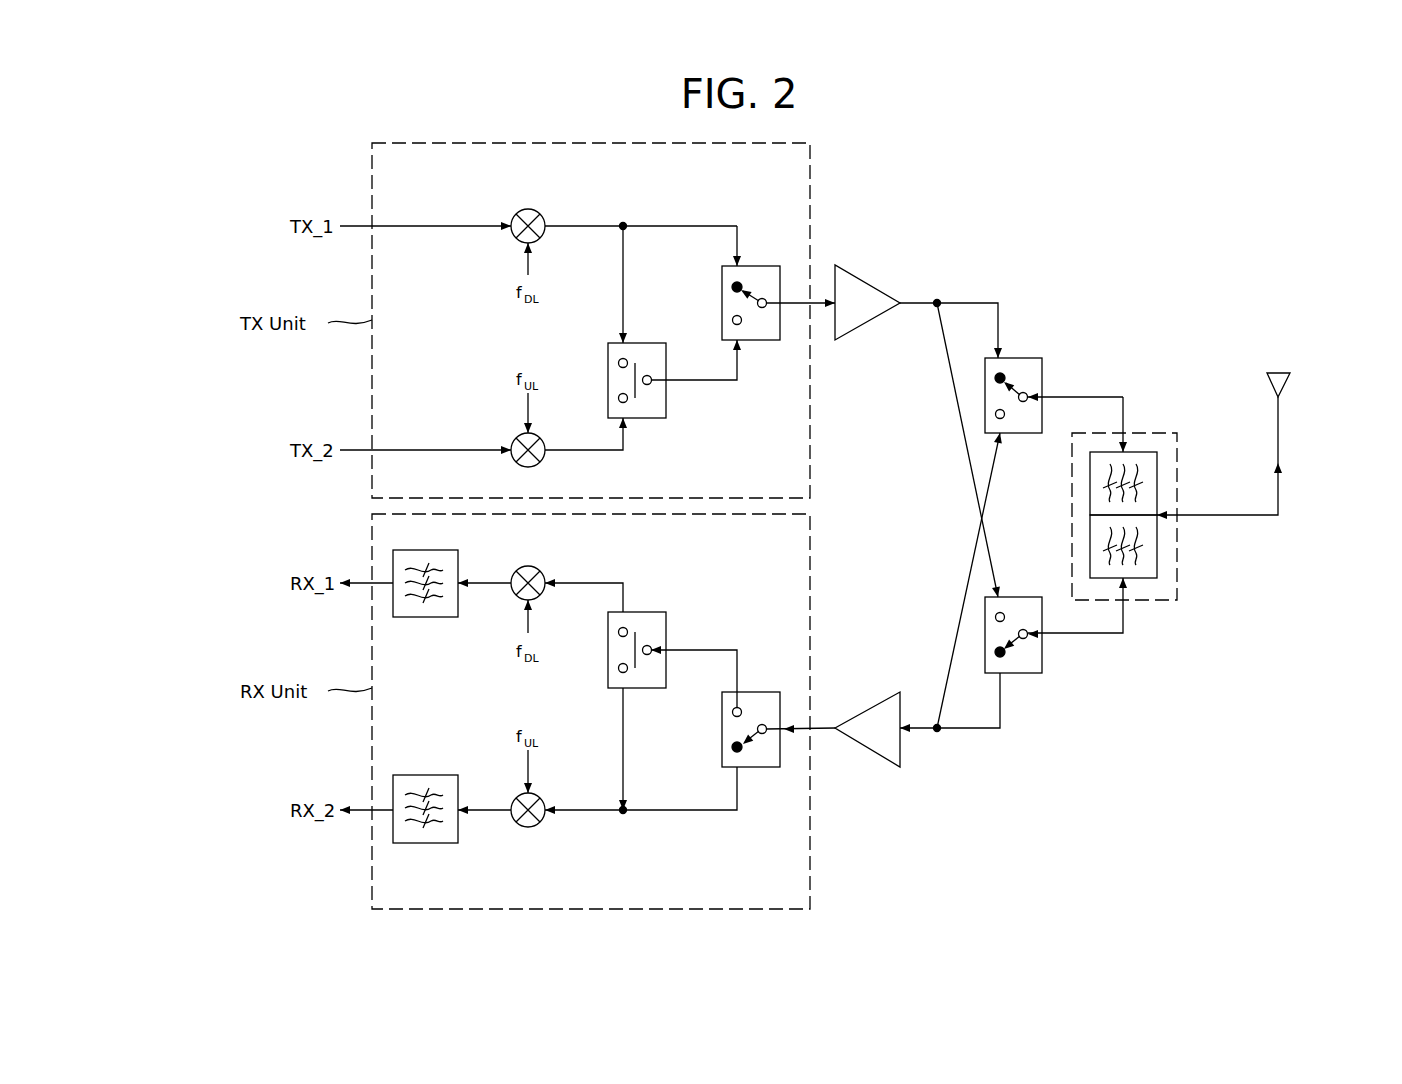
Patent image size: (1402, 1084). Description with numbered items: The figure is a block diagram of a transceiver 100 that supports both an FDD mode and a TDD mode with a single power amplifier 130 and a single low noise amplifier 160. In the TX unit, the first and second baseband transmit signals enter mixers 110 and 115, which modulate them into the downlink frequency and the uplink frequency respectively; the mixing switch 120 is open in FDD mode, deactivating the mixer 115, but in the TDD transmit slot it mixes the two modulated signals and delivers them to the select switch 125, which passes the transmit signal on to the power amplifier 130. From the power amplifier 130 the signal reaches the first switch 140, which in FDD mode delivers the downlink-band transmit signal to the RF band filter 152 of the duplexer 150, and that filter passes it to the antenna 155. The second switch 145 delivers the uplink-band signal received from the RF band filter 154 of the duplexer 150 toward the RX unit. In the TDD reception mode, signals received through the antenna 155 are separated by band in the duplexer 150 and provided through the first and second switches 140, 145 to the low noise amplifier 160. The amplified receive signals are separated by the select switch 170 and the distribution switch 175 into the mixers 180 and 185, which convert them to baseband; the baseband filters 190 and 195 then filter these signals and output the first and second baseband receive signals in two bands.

The transceiver 100 is at (977, 178).
The mixer 110 is at (528, 209).
The mixer 115 is at (528, 467).
The mixing switch SW_T1 120 is at (643, 343).
The select switch SW_T2 125 is at (757, 266).
The power amplifier 130 is at (868, 284).
The first switch SW_T3 140 is at (1025, 358).
The second switch SW_R3 145 is at (1025, 597).
The duplexer 150 is at (1121, 516).
The RF band filter 152 is at (1157, 480).
The RF band filter 154 is at (1157, 548).
The antenna 155 is at (1280, 373).
The low noise amplifier 160 is at (865, 711).
The select switch SW_R2 170 is at (760, 692).
The distribution switch SW_R1 175 is at (645, 612).
The mixer 180 is at (528, 566).
The mixer 185 is at (528, 827).
The baseband filter 190 is at (425, 550).
The baseband filter 195 is at (435, 775).